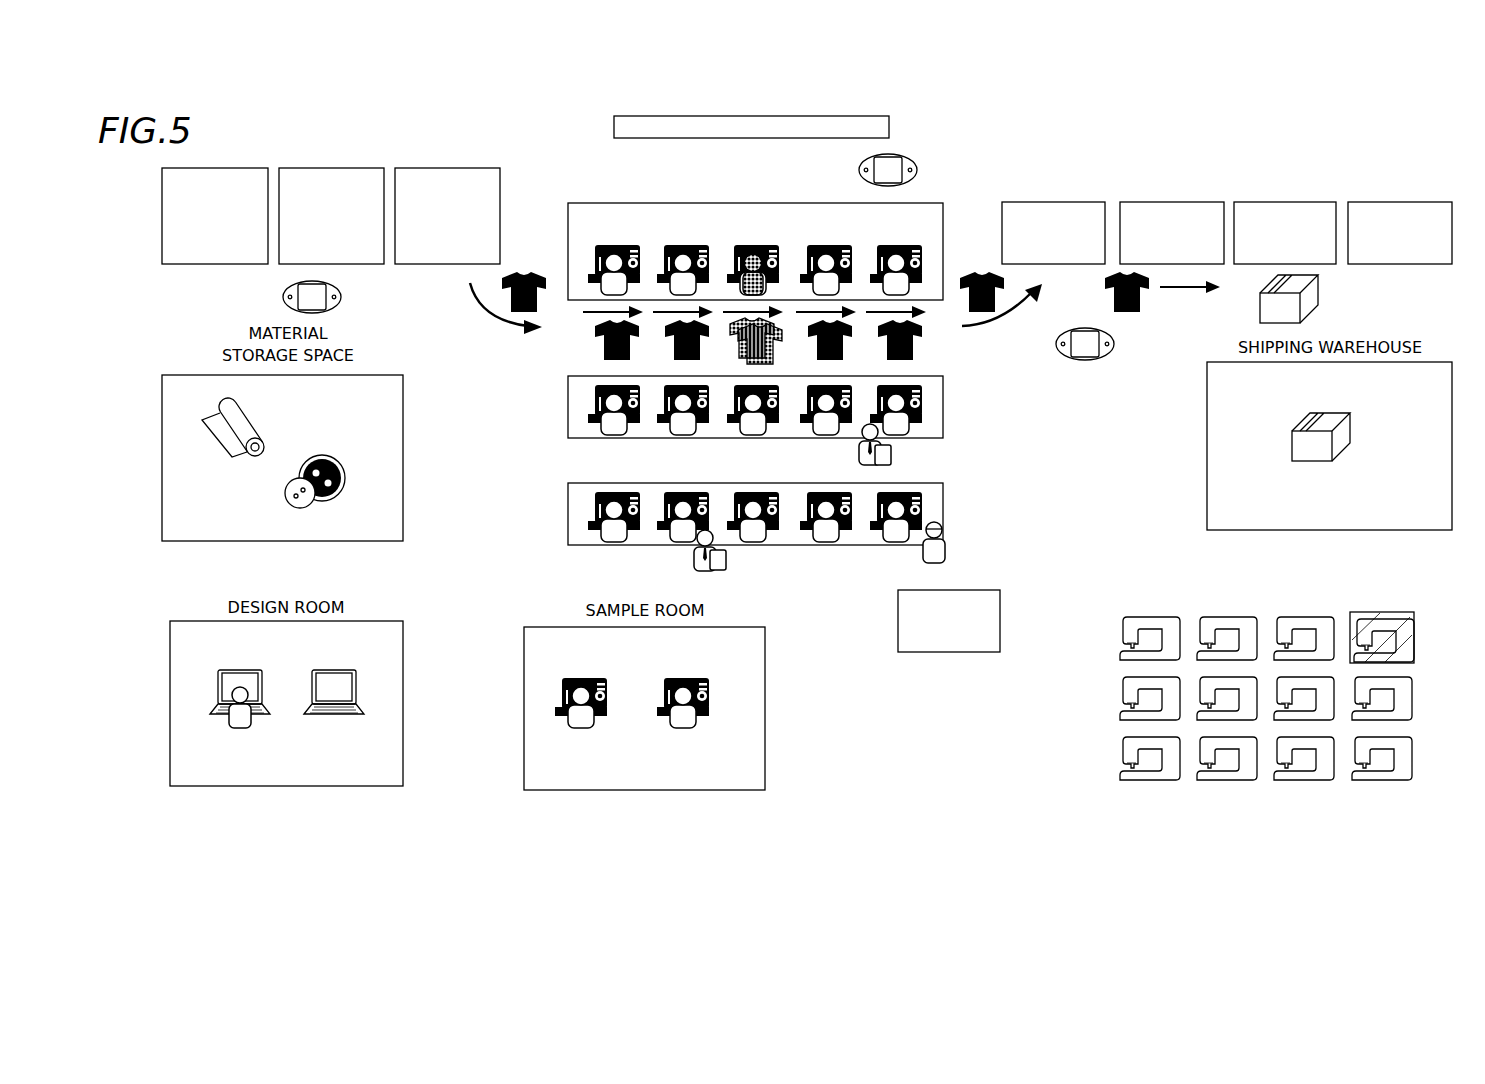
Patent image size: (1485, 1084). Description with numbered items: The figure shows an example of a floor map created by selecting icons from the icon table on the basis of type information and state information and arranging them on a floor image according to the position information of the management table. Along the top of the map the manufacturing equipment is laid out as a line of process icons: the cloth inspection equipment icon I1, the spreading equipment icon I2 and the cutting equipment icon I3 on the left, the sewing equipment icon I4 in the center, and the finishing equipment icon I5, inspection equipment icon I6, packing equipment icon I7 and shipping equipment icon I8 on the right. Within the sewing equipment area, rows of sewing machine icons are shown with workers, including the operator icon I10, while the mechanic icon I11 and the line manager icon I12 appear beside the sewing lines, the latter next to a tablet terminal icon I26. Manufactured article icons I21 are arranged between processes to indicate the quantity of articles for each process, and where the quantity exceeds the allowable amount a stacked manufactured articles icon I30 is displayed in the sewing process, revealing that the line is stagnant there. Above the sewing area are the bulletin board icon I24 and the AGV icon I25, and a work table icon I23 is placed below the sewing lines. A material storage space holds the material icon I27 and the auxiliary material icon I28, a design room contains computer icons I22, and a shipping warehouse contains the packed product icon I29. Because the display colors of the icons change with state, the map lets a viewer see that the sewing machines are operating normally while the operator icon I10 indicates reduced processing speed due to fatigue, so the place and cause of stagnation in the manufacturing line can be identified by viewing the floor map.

The cloth inspection equipment icon I1 is at (240, 167).
The spreading equipment icon I2 is at (352, 167).
The cutting equipment icon I3 is at (476, 167).
The sewing equipment icon I4 is at (775, 236).
The finishing equipment icon I5 is at (1078, 201).
The inspection equipment icon I6 is at (1196, 201).
The packing equipment icon I7 is at (1312, 201).
The shipping equipment icon I8 is at (1428, 201).
The operator icon I10 is at (902, 270).
The mechanic icon I11 is at (946, 546).
The line manager icon I12 is at (858, 452).
The manufactured article icon I21 is at (600, 333).
The computer icon I22 is at (343, 673).
The work table icon I23 is at (984, 590).
The bulletin board icon I24 is at (866, 116).
The AGV icon I25 is at (913, 153).
The tablet terminal icon I26 is at (893, 452).
The material icon I27 is at (243, 418).
The auxiliary material icon I28 is at (333, 456).
The packed product icon I29 is at (1340, 412).
The stacked manufactured articles icon I30 is at (744, 352).